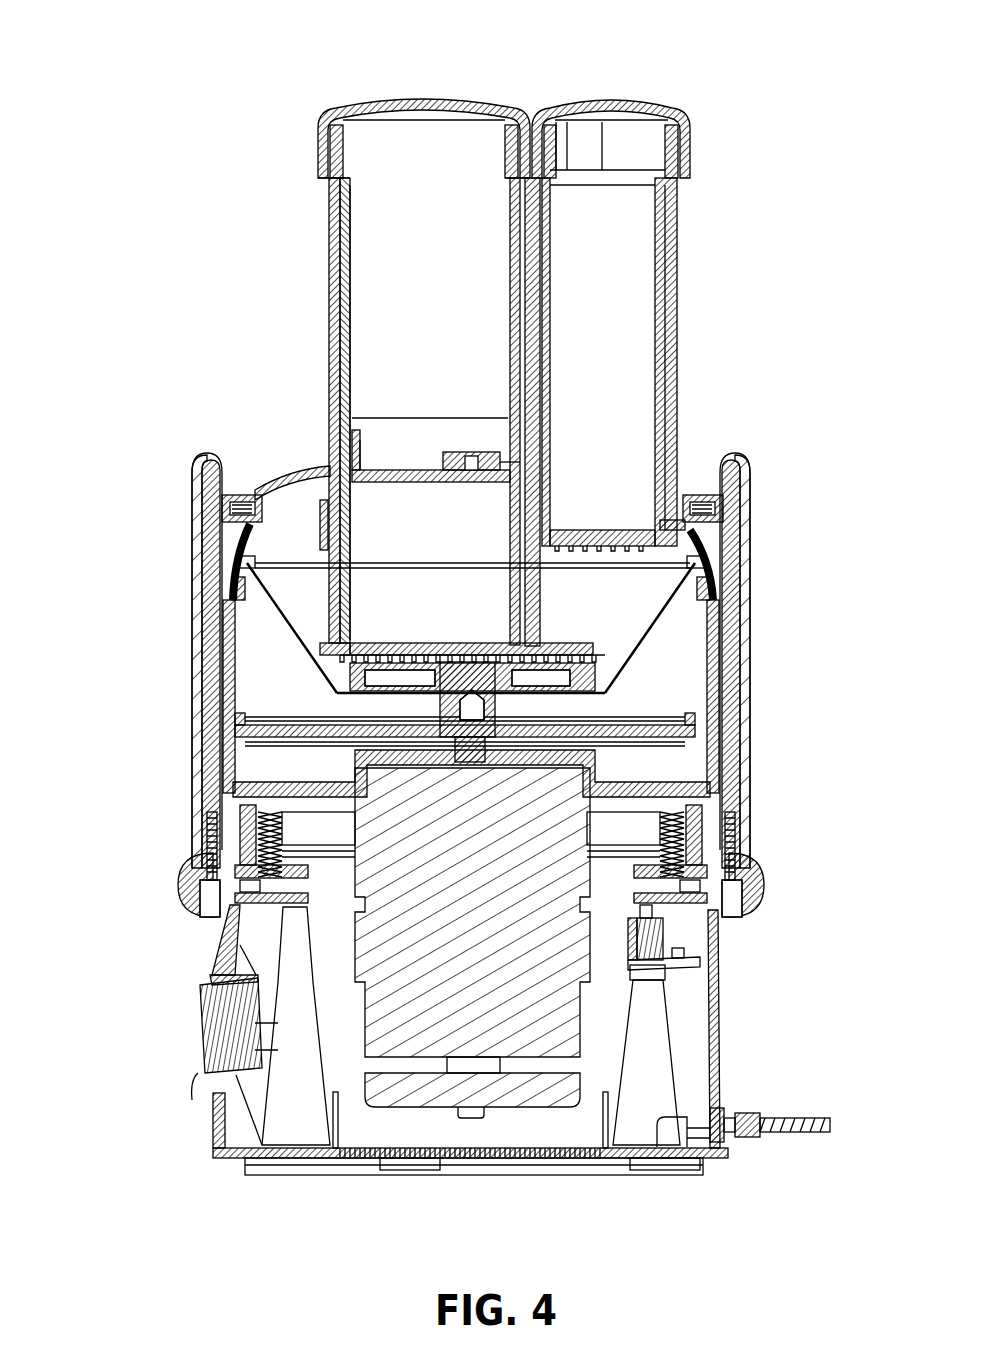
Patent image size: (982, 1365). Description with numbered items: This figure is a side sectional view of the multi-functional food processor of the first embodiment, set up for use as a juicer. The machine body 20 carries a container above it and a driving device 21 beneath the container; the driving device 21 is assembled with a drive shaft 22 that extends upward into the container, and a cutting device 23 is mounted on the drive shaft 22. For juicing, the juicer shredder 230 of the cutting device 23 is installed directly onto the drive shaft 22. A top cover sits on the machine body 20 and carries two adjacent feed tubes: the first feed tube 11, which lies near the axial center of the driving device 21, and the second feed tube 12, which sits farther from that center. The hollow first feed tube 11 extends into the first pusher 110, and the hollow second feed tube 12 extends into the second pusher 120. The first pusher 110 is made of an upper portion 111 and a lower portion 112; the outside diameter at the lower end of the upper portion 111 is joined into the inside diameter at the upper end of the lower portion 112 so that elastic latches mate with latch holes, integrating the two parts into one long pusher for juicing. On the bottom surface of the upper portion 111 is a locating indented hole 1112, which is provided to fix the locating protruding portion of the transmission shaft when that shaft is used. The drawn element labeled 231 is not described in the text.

The first pusher 110 is at (403, 327).
The second pusher 120 is at (644, 284).
The first feed tube 11 is at (333, 386).
The upper portion 111 is at (348, 326).
The lower portion 112 is at (352, 474).
The locating indented hole 1112 is at (487, 475).
The second feed tube 12 is at (672, 332).
The machine body 20 is at (160, 888).
The driving device 21 is at (345, 1035).
The drive shaft 22 is at (488, 749).
The cutting device 23 is at (466, 672).
The juicer shredder 230 is at (633, 676).
The filter cone wall 231 is at (290, 628).